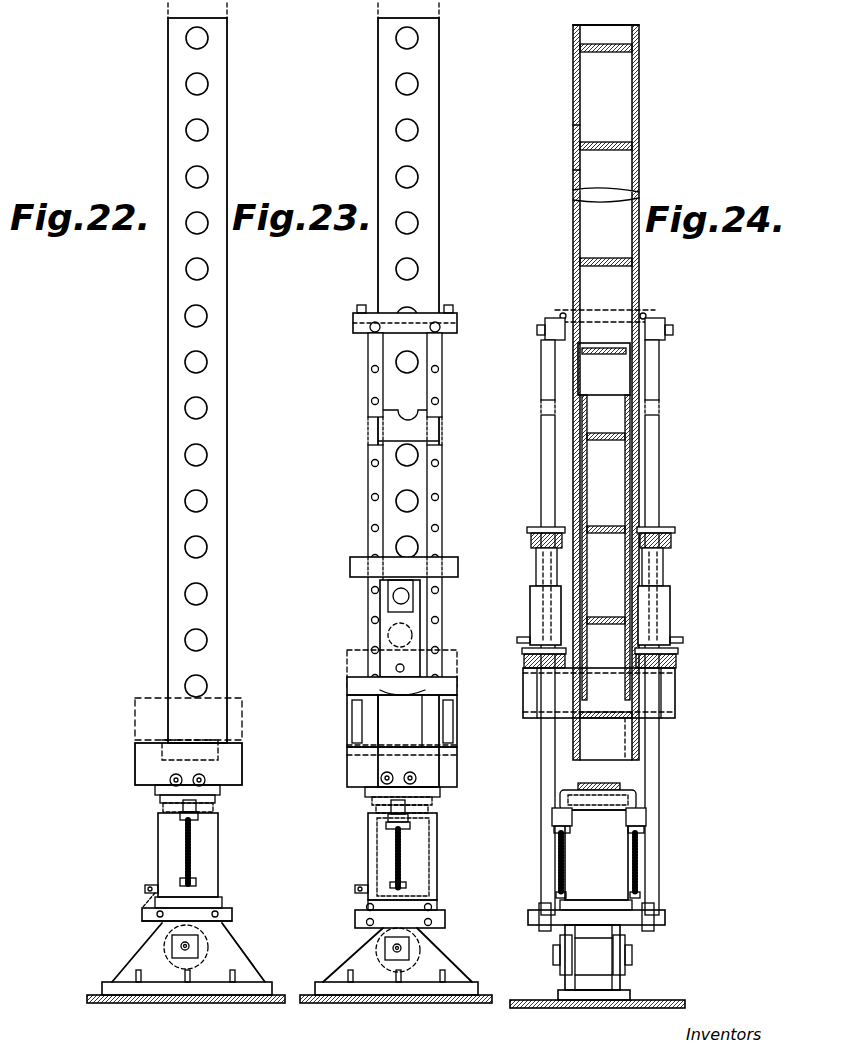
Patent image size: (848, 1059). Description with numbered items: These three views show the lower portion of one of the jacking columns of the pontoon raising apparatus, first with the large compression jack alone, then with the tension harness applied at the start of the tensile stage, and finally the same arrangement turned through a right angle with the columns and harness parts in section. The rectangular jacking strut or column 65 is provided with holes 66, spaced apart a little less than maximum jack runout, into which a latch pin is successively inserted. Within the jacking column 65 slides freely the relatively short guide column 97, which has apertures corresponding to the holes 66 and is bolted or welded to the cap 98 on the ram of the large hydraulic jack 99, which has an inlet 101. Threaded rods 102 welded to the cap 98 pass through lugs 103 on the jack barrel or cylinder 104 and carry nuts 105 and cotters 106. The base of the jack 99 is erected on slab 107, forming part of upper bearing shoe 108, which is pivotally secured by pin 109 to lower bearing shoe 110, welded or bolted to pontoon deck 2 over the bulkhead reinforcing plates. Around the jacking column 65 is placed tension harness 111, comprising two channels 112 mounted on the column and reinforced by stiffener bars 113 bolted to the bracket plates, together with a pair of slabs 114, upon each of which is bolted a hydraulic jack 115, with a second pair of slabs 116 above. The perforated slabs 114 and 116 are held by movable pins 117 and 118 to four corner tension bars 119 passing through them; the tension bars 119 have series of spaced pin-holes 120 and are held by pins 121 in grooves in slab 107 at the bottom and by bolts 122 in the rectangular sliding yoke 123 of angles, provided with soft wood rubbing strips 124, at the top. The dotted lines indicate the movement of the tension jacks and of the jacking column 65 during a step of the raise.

In FIG. 22, the pontoon deck 2 is at (306, 1001).
In FIG. 23, the pontoon deck 2 is at (305, 1000).
In FIG. 24, the pontoon deck 2 is at (688, 1006).
In FIG. 22, the jacking strut or column 65 is at (217, 133).
In FIG. 23, the jacking strut or column 65 is at (433, 112).
In FIG. 24, the jacking strut or column 65 is at (640, 98).
In FIG. 22, the holes 66 is at (192, 320).
In FIG. 23, the holes 66 is at (414, 180).
In FIG. 24, the holes 66 is at (573, 125).
In FIG. 24, the guide column 97 is at (632, 448).
In FIG. 22, the cap 98 is at (166, 800).
In FIG. 23, the cap 98 is at (368, 798).
In FIG. 24, the cap 98 is at (570, 790).
In FIG. 22, the large hydraulic jack 99 is at (216, 837).
In FIG. 23, the large hydraulic jack 99 is at (415, 862).
In FIG. 24, the large hydraulic jack 99 is at (568, 862).
In FIG. 22, the inlet 101 is at (146, 889).
In FIG. 23, the inlet 101 is at (356, 889).
In FIG. 22, the threaded rods 102 is at (185, 851).
In FIG. 23, the threaded rods 102 is at (395, 845).
In FIG. 24, the threaded rods 102 is at (556, 872).
In FIG. 22, the lugs 103 is at (199, 811).
In FIG. 23, the lugs 103 is at (375, 816).
In FIG. 24, the lugs 103 is at (553, 818).
In FIG. 22, the jack barrel or cylinder 104 is at (216, 861).
In FIG. 23, the jack barrel or cylinder 104 is at (385, 864).
In FIG. 24, the jack barrel or cylinder 104 is at (640, 884).
In FIG. 22, the nuts 105 is at (192, 881).
In FIG. 23, the nuts 105 is at (410, 824).
In FIG. 24, the nuts 105 is at (556, 836).
In FIG. 22, the cotters 106 is at (223, 901).
In FIG. 23, the cotters 106 is at (408, 886).
In FIG. 24, the cotters 106 is at (605, 896).
In FIG. 22, the slab 107 is at (226, 915).
In FIG. 23, the slab 107 is at (358, 918).
In FIG. 24, the slab 107 is at (630, 928).
In FIG. 22, the upper bearing shoe 108 is at (166, 928).
In FIG. 23, the upper bearing shoe 108 is at (425, 936).
In FIG. 24, the upper bearing shoe 108 is at (596, 918).
In FIG. 22, the pin 109 is at (200, 946).
In FIG. 23, the pin 109 is at (392, 962).
In FIG. 24, the pin 109 is at (590, 956).
In FIG. 22, the lower bearing shoe 110 is at (204, 982).
In FIG. 23, the lower bearing shoe 110 is at (420, 984).
In FIG. 24, the lower bearing shoe 110 is at (606, 1004).
In FIG. 23, the tension harness 111 is at (369, 507).
In FIG. 24, the tension harness 111 is at (656, 505).
In FIG. 23, the channels 112 is at (355, 728).
In FIG. 24, the channels 112 is at (530, 728).
In FIG. 23, the stiffener bars 113 is at (350, 709).
In FIG. 24, the stiffener bars 113 is at (530, 702).
In FIG. 23, the slabs 114 is at (349, 686).
In FIG. 24, the slabs 114 is at (525, 680).
In FIG. 23, the hydraulic jack 115 is at (382, 622).
In FIG. 24, the hydraulic jack 115 is at (540, 612).
In FIG. 23, the slabs 116 is at (355, 572).
In FIG. 24, the slabs 116 is at (530, 542).
In FIG. 23, the movable pins 117 is at (402, 692).
In FIG. 24, the movable pins 117 is at (678, 656).
In FIG. 23, the movable pins 118 is at (433, 556).
In FIG. 24, the movable pins 118 is at (560, 528).
In FIG. 23, the tension bars 119 is at (430, 395).
In FIG. 24, the tension bars 119 is at (545, 400).
In FIG. 23, the pin-holes 120 is at (372, 462).
In FIG. 23, the pins 121 is at (365, 928).
In FIG. 24, the pins 121 is at (540, 920).
In FIG. 23, the bolts 122 is at (355, 328).
In FIG. 24, the bolts 122 is at (540, 330).
In FIG. 23, the sliding yoke 123 is at (368, 338).
In FIG. 24, the sliding yoke 123 is at (548, 350).
In FIG. 23, the rubbing strips 124 is at (366, 326).
In FIG. 24, the rubbing strips 124 is at (648, 313).